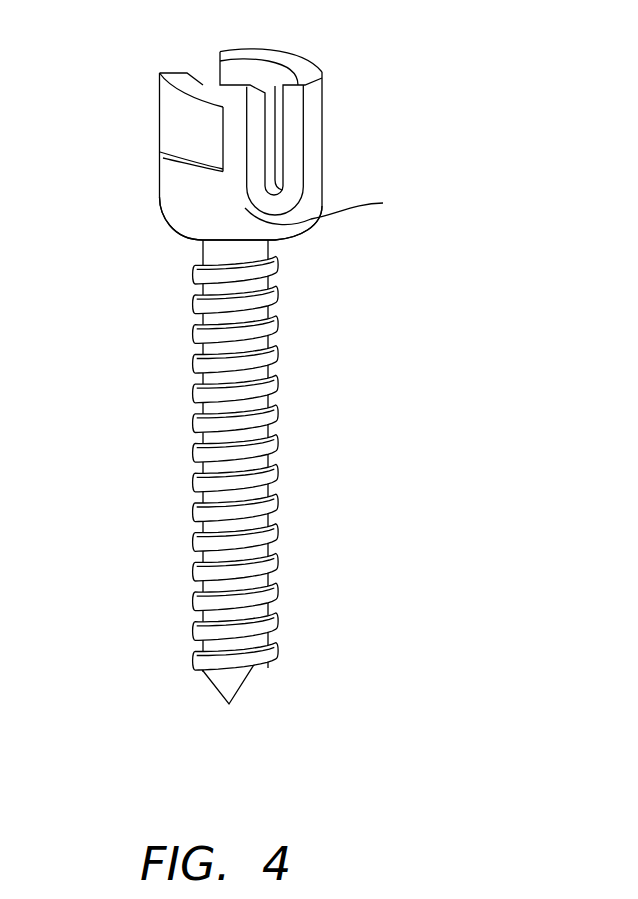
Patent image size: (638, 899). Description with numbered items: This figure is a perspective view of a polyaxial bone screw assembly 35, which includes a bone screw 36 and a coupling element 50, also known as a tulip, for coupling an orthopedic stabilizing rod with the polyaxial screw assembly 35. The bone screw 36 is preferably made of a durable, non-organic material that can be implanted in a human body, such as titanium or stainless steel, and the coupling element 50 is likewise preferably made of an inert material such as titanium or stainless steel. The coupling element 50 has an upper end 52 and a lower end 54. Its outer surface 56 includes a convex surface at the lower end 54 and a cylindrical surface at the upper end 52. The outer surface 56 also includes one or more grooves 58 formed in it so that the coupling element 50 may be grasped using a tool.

The polyaxial bone screw assembly 35 is at (387, 107).
The bone screw 36 is at (153, 535).
The coupling element 50 is at (230, 145).
The upper end 52 is at (225, 101).
The lower end 54 is at (182, 233).
The outer surface 56 is at (332, 207).
The grooves 58 is at (182, 125).